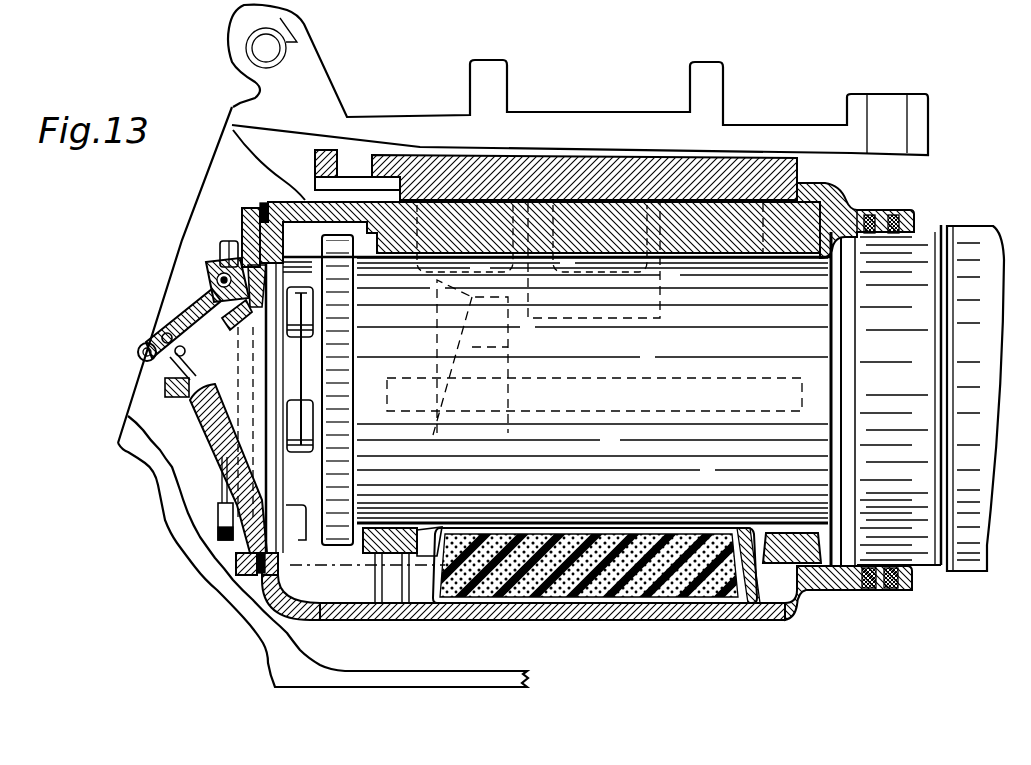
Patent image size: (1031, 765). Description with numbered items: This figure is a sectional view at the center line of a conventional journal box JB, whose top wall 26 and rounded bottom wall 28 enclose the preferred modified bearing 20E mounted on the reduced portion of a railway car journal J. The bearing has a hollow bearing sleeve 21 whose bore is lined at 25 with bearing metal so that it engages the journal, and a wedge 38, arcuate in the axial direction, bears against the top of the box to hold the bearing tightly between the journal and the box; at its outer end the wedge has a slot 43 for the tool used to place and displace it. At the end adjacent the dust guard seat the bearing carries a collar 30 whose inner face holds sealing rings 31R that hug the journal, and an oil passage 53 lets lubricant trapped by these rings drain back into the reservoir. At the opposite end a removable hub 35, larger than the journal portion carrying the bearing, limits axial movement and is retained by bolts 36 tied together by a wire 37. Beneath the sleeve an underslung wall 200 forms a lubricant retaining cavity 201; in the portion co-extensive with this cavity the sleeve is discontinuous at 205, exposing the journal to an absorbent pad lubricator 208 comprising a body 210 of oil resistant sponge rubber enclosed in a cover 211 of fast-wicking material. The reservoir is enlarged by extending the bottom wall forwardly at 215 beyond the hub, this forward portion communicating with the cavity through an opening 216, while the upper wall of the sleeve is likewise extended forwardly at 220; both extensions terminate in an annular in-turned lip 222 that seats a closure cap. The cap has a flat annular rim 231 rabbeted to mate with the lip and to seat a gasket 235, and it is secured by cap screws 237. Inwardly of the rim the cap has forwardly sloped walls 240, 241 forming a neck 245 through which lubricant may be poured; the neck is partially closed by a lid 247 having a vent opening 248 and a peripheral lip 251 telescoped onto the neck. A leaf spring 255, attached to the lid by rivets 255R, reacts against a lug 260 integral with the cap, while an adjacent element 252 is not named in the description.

The top wall 26 is at (528, 120).
The journal box JB is at (750, 124).
The slot 43 is at (340, 173).
The wedge 38 is at (573, 160).
The bearing 20E is at (847, 196).
The collar 30 is at (877, 211).
The journal J is at (974, 228).
The sealing rings 31R is at (895, 236).
The forward extension of upper wall 220 is at (300, 202).
The gasket 235 is at (240, 210).
The lug 260 is at (214, 252).
The leaf spring 255 is at (213, 273).
The lever 252 is at (205, 310).
The rivets 255R is at (150, 348).
The lid 247 is at (155, 366).
The opening 248 is at (173, 363).
The sloped wall 241 is at (236, 332).
The neck 245 is at (197, 381).
The peripheral lip 251 is at (181, 390).
The sloped wall 240 is at (218, 440).
The cap screws 237 is at (220, 538).
The annular rim 231 is at (237, 568).
The in-turned lip 222 is at (280, 563).
The opening 216 is at (387, 560).
The forward extension of bottom wall 215 is at (295, 607).
The lubricant retaining cavity 201 is at (411, 567).
The underslung wall 200 is at (437, 612).
The cover 211 is at (489, 622).
The absorbent body 210 is at (567, 583).
The bottom wall 28 is at (372, 684).
The oil passage 53 is at (815, 567).
The bearing metal lining 25 is at (787, 262).
The discontinuity 205 is at (427, 535).
The pad lubricator 208 is at (548, 525).
The bearing sleeve 21 is at (397, 240).
The bolts 36 is at (310, 319).
The removable hub 35 is at (342, 335).
The wire 37 is at (302, 374).